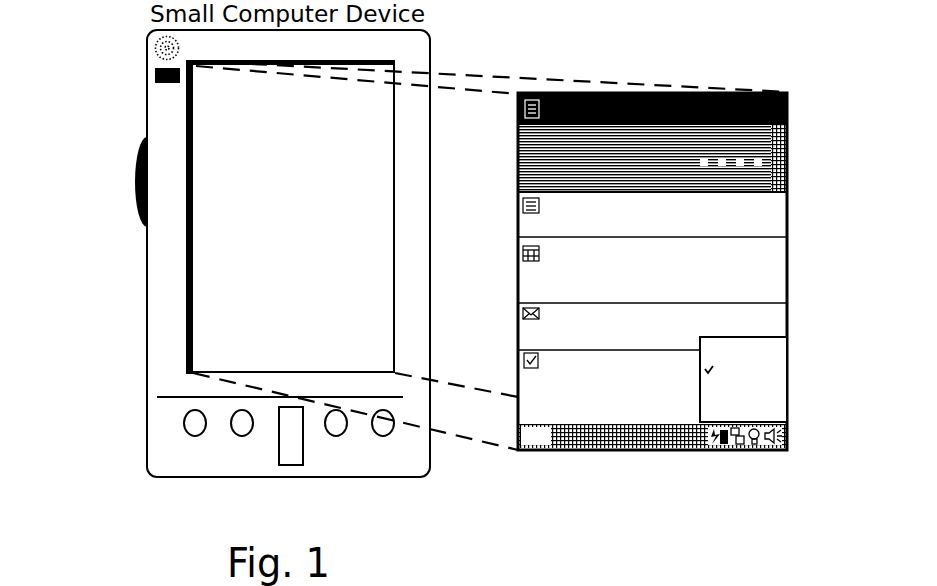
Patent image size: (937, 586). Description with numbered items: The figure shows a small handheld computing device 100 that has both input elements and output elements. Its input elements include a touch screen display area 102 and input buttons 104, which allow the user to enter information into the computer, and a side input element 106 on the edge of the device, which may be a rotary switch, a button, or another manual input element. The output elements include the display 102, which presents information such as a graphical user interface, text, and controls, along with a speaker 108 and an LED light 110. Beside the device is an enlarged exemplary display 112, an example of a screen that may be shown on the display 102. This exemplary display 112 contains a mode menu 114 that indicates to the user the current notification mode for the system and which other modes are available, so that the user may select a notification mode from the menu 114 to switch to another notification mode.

The computing device 100 is at (430, 41).
The touch screen display area 102 is at (205, 326).
The input buttons 104 is at (383, 436).
The side input element 106 is at (136, 165).
The speaker 108 is at (154, 45).
The LED light 110 is at (155, 78).
The display 112 is at (760, 92).
The mode menu 114 is at (786, 361).